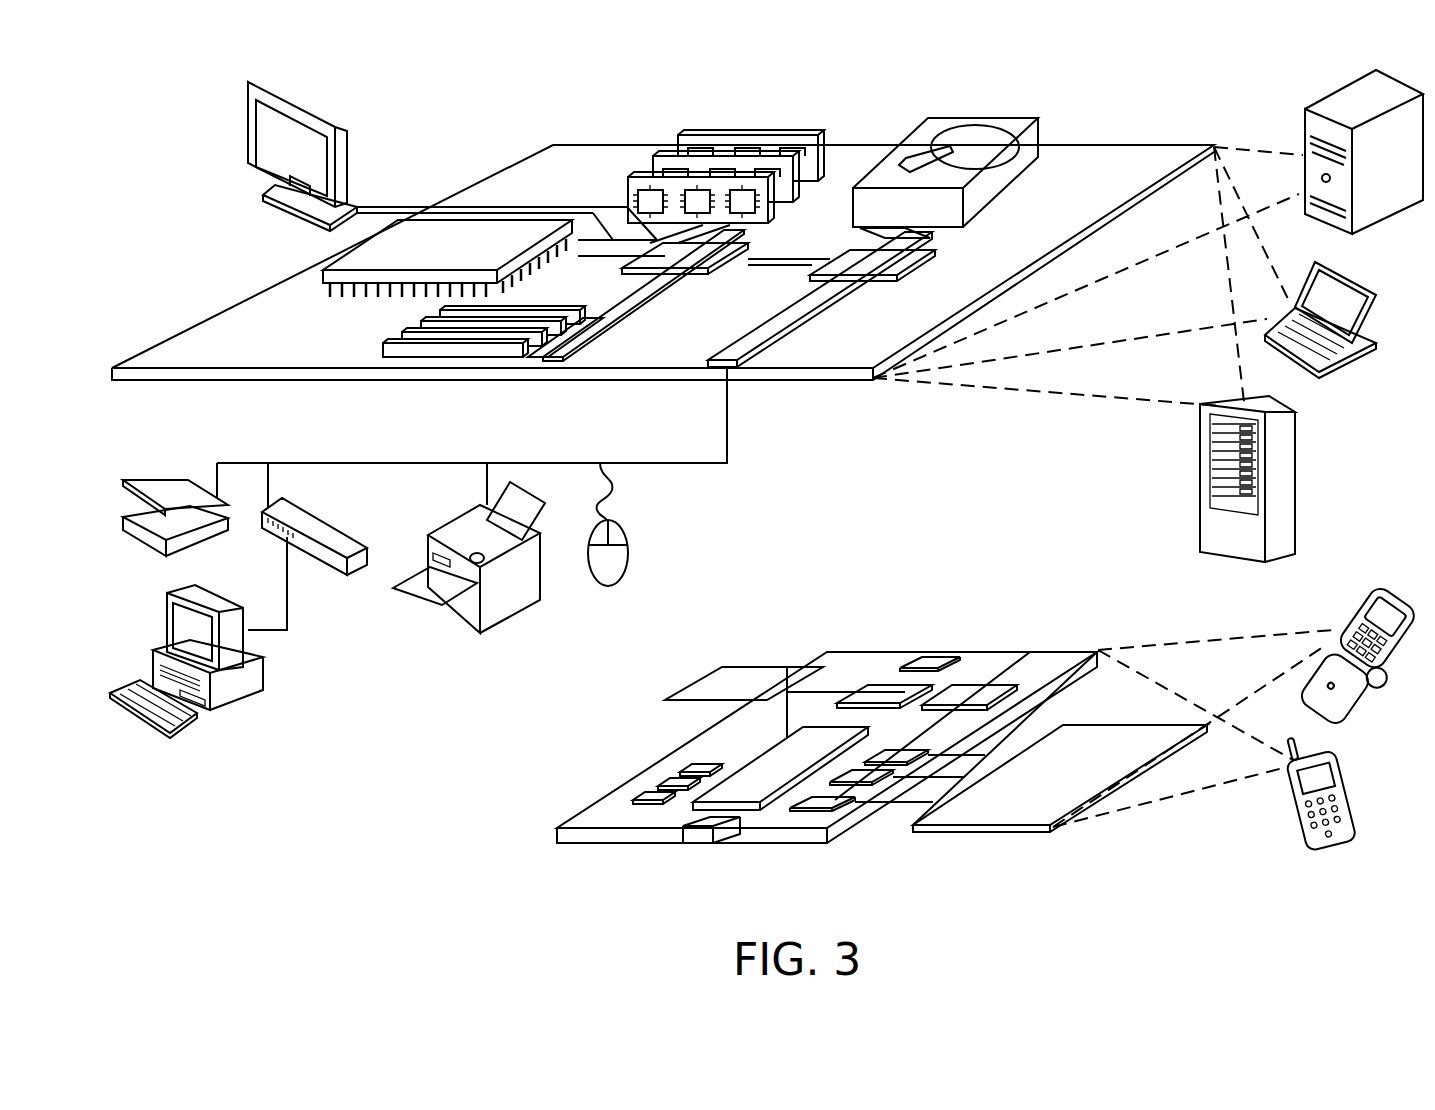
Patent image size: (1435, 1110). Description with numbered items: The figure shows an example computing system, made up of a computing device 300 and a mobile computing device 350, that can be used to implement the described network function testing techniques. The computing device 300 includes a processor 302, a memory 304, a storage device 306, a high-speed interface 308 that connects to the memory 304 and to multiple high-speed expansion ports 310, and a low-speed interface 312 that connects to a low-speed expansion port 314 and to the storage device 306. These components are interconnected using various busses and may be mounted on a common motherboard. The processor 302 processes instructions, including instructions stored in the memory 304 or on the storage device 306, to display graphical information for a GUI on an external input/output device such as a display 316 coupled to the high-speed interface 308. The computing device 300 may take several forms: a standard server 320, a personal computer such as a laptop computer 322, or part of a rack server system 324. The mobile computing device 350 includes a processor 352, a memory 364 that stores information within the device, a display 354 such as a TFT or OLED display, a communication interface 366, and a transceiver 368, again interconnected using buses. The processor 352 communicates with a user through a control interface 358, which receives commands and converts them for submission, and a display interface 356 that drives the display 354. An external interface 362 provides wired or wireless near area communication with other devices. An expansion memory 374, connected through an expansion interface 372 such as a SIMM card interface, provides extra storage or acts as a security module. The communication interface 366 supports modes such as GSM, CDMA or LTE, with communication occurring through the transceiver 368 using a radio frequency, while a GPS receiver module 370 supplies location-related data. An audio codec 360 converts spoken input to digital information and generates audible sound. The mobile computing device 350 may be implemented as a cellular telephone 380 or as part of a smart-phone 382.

The computing device 300 is at (184, 108).
The processor 302 is at (323, 273).
The memory 304 is at (697, 133).
The storage device 306 is at (953, 118).
The high-speed interface 308 is at (657, 263).
The high-speed expansion ports 310 is at (412, 338).
The low-speed interface 312 is at (852, 262).
The low-speed expansion port 314 is at (737, 368).
The display 316 is at (312, 103).
The standard server 320 is at (1300, 125).
The laptop computer 322 is at (1340, 354).
The rack server system 324 is at (1200, 508).
The mobile computing device 350 is at (531, 797).
The processor 352 is at (753, 797).
The display 354 is at (1015, 810).
The display interface 356 is at (823, 800).
The control interface 358 is at (862, 775).
The audio codec 360 is at (893, 752).
The external interface 362 is at (715, 835).
The memory 364 is at (660, 783).
The communication interface 366 is at (883, 690).
The transceiver 368 is at (970, 690).
The GPS receiver module 370 is at (932, 660).
The expansion interface 372 is at (787, 667).
The expansion memory 374 is at (722, 668).
The cellular telephone 380 is at (1358, 610).
The smart-phone 382 is at (1290, 800).